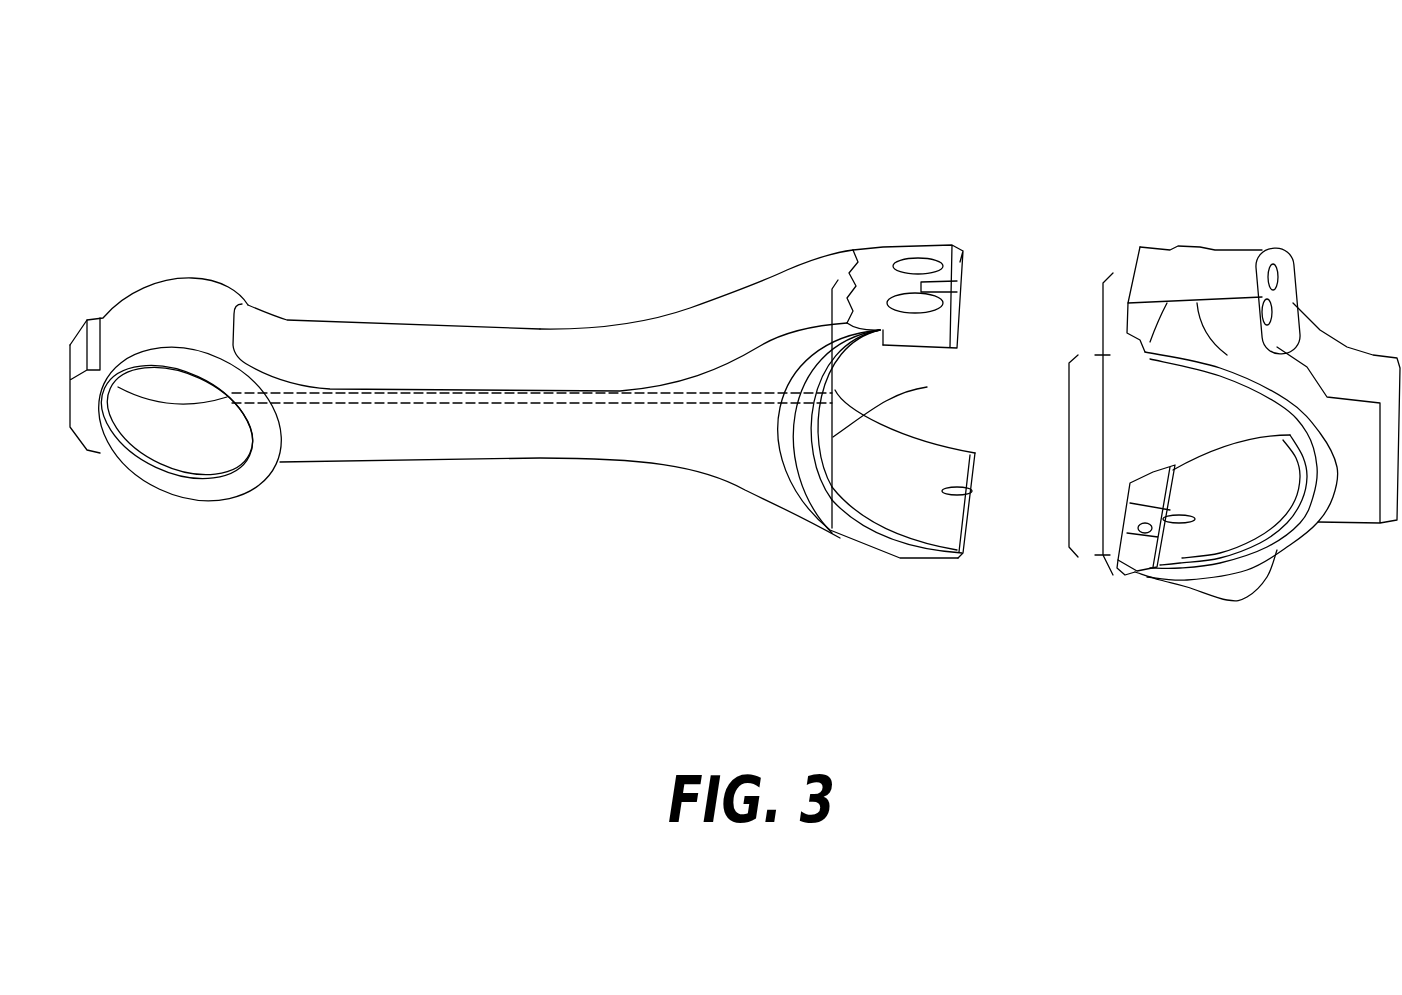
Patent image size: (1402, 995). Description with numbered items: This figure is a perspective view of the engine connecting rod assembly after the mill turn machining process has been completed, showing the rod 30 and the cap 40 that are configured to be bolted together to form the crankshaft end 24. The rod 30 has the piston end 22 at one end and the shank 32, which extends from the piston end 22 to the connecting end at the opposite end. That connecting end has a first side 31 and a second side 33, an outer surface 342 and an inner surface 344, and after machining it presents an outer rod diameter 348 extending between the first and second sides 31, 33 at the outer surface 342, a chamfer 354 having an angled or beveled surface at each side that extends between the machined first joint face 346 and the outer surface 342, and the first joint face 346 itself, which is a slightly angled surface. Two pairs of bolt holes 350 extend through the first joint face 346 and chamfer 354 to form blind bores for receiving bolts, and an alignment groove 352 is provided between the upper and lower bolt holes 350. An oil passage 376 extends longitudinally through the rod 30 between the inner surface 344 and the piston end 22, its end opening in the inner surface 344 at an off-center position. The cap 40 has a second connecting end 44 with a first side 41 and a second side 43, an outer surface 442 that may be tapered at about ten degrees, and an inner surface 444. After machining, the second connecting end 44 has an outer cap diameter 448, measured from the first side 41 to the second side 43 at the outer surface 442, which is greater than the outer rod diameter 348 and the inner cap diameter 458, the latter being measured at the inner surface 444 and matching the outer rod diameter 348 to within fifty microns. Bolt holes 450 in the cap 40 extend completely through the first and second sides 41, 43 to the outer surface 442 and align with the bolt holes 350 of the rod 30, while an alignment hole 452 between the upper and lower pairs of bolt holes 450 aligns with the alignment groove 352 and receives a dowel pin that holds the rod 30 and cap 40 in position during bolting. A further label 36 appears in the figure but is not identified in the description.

The piston end 22 is at (204, 284).
The crankshaft end 24 is at (1043, 152).
The rod 30 is at (446, 306).
The first side 31 is at (851, 233).
The shank 32 is at (510, 338).
The second side 33 is at (961, 568).
The rod portion of crank end 36 is at (934, 190).
The cap 40 is at (1219, 224).
The first side 41 is at (1182, 244).
The second side 43 is at (1166, 568).
The second connecting end 44 is at (1113, 590).
The outer surface 342 is at (800, 272).
The inner surface 344 is at (890, 512).
The first joint face 346 is at (957, 250).
The outer rod diameter 348 is at (925, 387).
The bolt holes 350 is at (952, 268).
The alignment slot or groove 352 is at (935, 260).
The chamfer or beveled edge 354 is at (873, 257).
The oil passage 376 is at (667, 393).
The outer surface 442 is at (1157, 250).
The inner surface 444 is at (1240, 535).
The outer cap diameter 448 is at (1108, 402).
The bolt holes 450 is at (1273, 270).
The alignment or pin hole 452 is at (1145, 528).
The inner cap diameter 458 is at (1069, 422).